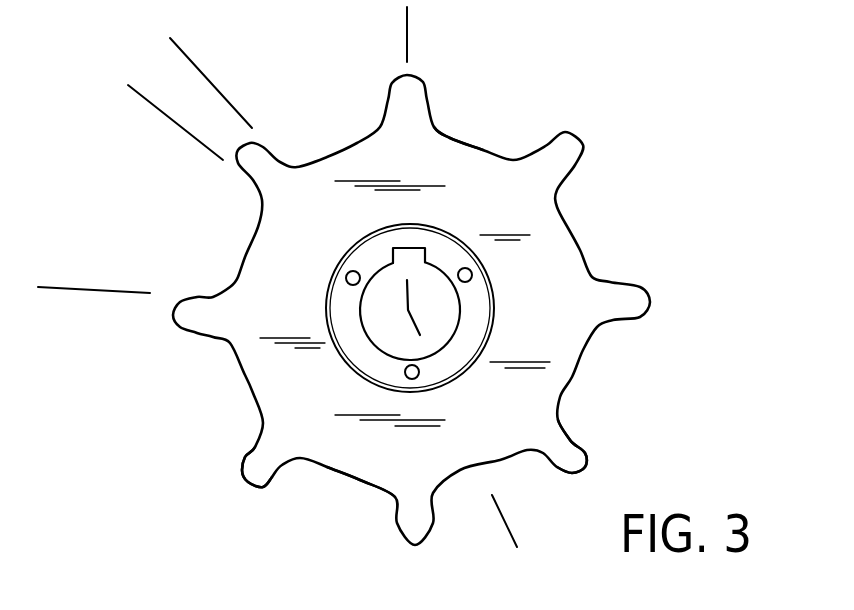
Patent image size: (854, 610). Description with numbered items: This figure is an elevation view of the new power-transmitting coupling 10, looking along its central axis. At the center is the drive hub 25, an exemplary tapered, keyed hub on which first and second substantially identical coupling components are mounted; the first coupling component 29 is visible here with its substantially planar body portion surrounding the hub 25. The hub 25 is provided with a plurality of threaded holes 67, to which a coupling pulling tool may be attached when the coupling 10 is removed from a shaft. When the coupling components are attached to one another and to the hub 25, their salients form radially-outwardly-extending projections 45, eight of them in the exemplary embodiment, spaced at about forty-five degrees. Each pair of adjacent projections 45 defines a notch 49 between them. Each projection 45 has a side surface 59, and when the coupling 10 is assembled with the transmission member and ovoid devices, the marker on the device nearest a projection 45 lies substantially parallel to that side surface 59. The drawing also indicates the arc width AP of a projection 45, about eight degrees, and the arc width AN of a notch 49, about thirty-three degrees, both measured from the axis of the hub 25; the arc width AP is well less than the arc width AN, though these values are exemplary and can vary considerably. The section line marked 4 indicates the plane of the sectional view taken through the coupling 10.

The power-transmitting coupling 10 is at (630, 196).
The drive hub 25 is at (342, 316).
The first coupling component 29 is at (353, 450).
The projection 45 is at (580, 465).
The notch 49 is at (480, 125).
The side surface 59 is at (253, 448).
The threaded holes 67 is at (478, 274).
The section line 4- 4 is at (405, 19).
The arc width of projection AP is at (227, 22).
The arc width of notch AN is at (143, 98).